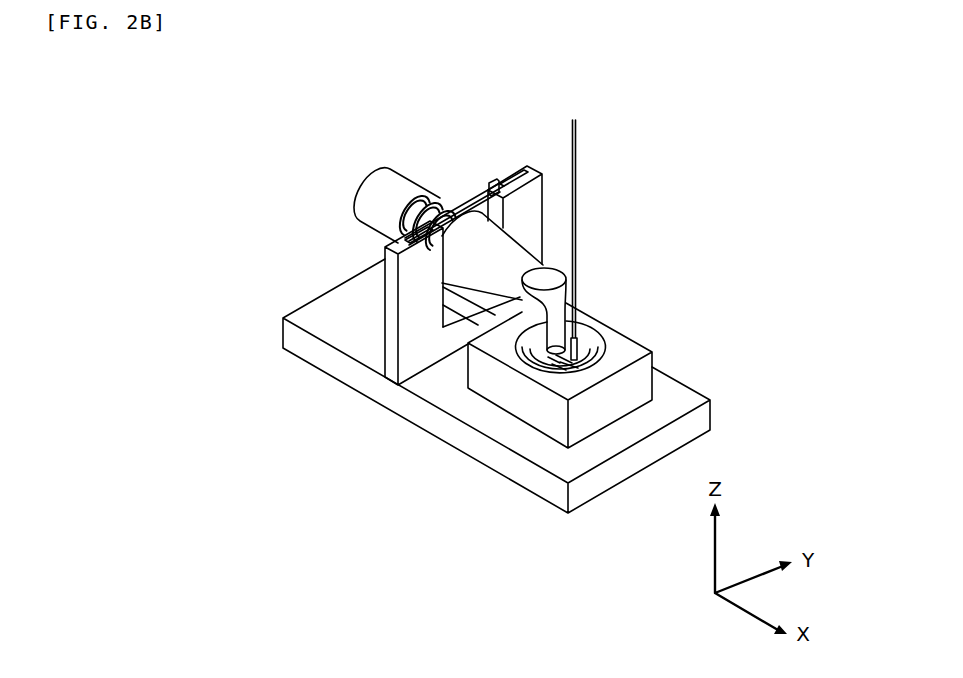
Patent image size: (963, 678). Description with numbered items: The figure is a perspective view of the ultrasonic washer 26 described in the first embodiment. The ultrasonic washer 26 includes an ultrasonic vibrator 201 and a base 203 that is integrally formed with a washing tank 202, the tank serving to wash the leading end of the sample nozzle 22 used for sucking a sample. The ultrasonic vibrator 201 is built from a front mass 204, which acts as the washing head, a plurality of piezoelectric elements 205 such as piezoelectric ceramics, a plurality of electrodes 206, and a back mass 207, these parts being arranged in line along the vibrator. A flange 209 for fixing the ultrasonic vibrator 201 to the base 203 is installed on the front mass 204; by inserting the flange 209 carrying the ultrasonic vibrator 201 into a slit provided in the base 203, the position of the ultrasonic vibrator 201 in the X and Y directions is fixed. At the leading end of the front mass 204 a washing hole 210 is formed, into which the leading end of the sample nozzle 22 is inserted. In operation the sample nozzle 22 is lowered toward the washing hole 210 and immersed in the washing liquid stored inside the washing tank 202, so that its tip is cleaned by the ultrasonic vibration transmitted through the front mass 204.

The sample nozzle 22 is at (577, 187).
The ultrasonic washer 26 is at (757, 291).
The ultrasonic vibrator 201 is at (450, 190).
The washing tank 202 is at (597, 337).
The base 203 is at (690, 388).
The front mass 204 is at (533, 334).
The piezoelectric elements 205 is at (403, 221).
The electrodes 206 is at (417, 192).
The back mass 207 is at (388, 184).
The flange 209 is at (490, 181).
The washing hole 210 is at (556, 350).